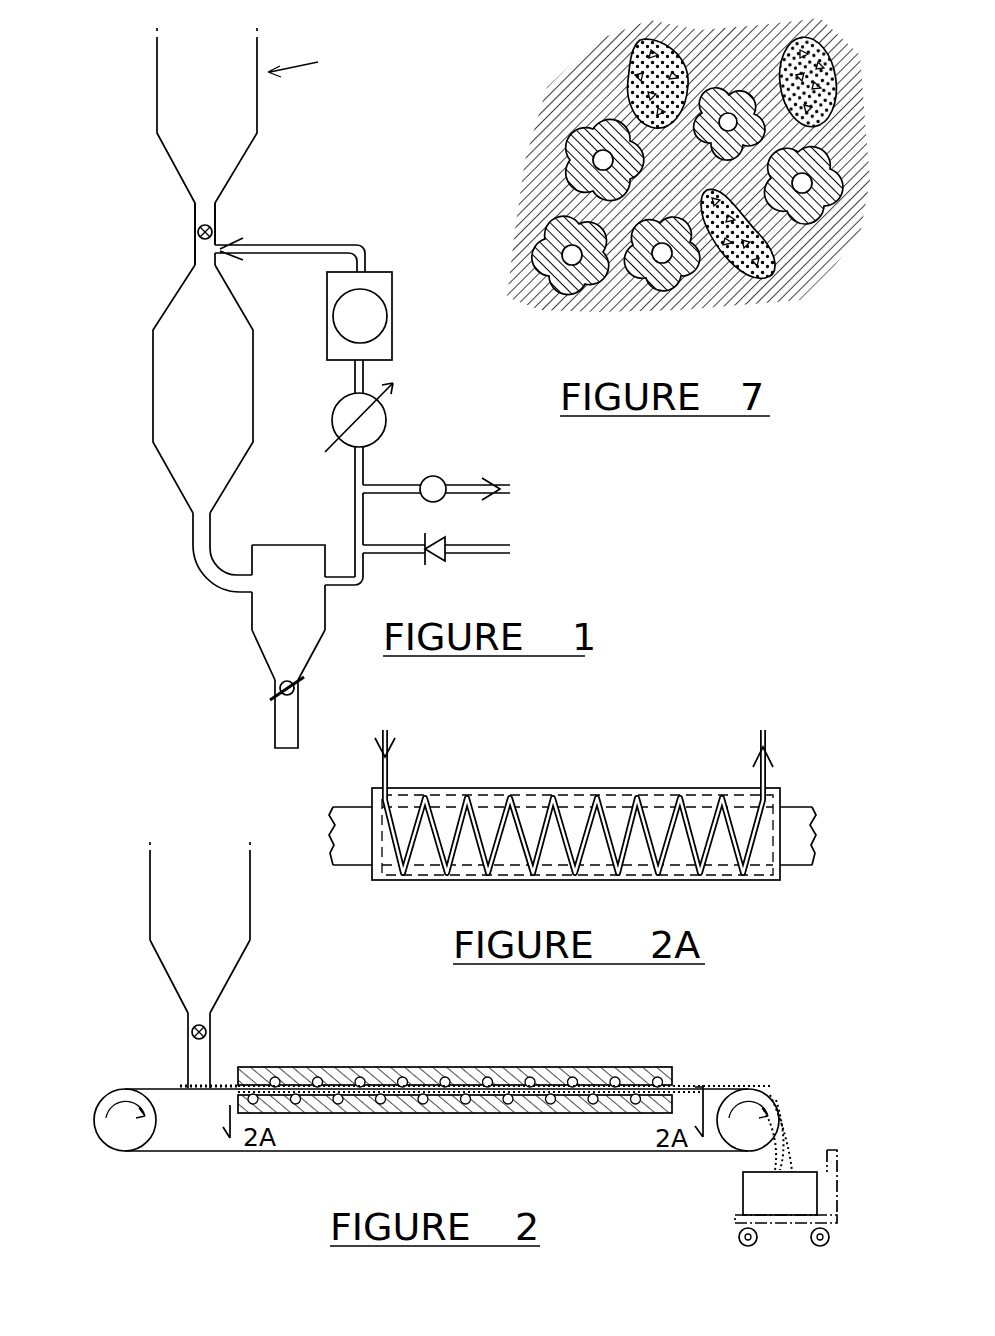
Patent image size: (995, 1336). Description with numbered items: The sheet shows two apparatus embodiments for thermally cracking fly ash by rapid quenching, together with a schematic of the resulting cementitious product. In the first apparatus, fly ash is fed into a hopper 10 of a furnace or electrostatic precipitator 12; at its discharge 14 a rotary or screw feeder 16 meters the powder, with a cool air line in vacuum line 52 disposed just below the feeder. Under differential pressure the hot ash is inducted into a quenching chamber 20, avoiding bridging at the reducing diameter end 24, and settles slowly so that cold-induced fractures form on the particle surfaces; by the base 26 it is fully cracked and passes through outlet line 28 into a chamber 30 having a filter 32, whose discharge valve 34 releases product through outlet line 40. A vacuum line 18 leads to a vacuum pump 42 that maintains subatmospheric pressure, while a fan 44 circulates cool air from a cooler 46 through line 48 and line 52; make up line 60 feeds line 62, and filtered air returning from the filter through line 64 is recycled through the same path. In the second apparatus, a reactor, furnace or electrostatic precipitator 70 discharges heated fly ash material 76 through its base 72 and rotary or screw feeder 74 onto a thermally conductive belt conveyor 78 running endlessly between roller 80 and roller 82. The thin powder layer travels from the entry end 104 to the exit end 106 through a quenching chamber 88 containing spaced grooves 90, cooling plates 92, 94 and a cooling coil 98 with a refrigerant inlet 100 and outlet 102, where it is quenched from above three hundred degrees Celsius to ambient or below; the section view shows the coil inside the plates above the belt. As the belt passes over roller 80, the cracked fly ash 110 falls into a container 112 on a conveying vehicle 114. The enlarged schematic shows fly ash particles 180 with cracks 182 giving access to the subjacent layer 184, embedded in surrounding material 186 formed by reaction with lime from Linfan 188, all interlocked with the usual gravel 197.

In FIG. 1, the hopper 10 is at (170, 88).
In FIG. 1, the furnace or electrostatic precipitator 12 is at (309, 64).
In FIG. 1, the discharge 14 is at (205, 212).
In FIG. 1, the rotary or screw feeder 16 is at (196, 232).
In FIG. 1, the vacuum line 18 is at (391, 485).
In FIG. 1, the quenching chamber 20 is at (165, 373).
In FIG. 1, the reducing diameter end 24 is at (213, 205).
In FIG. 1, the base 26 is at (200, 517).
In FIG. 1, the outlet line 28 is at (232, 578).
In FIG. 1, the chamber 30 is at (265, 544).
In FIG. 1, the filter 32 is at (285, 657).
In FIG. 1, the discharge valve 34 is at (280, 684).
In FIG. 1, the outlet line 40 is at (275, 724).
In FIG. 1, the vacuum pump 42 is at (441, 479).
In FIG. 1, the fan 44 is at (326, 318).
In FIG. 1, the cooler 46 is at (332, 416).
In FIG. 1, the line 48 is at (354, 378).
In FIG. 1, the cool air line in vacuum line 52 is at (297, 245).
In FIG. 1, the make up line 60 is at (385, 557).
In FIG. 1, the line 62 is at (355, 500).
In FIG. 1, the line 64 is at (343, 586).
In FIG. 2, the reactor, furnace or electrostatic precipitator 70 is at (165, 899).
In FIG. 2, the base 72 is at (188, 985).
In FIG. 2, the rotary or screw feeder 74 is at (191, 1031).
In FIG. 2, the heated fly ash material 76 is at (185, 1083).
In FIG. 2A, the belt conveyor 78 is at (356, 868).
In FIG. 2, the belt conveyor 78 is at (200, 1092).
In FIG. 2, the roller 80 is at (745, 1143).
In FIG. 2, the roller 82 is at (116, 1133).
In FIG. 2, the quenching chamber 88 is at (346, 1067).
In FIG. 2, the grooves 90 is at (445, 1066).
In FIG. 2, the cooling plate 92 is at (592, 1069).
In FIG. 2, the cooling plate 94 is at (360, 1114).
In FIG. 2A, the cooling coil 98 is at (585, 820).
In FIG. 2, the cooling coil 98 is at (585, 1114).
In FIG. 2A, the inlet 100 is at (392, 771).
In FIG. 2A, the outlet 102 is at (758, 781).
In FIG. 2, the entry end 104 is at (229, 1082).
In FIG. 2, the exit end 106 is at (680, 1090).
In FIG. 2, the cracked fly ash 110 is at (792, 1160).
In FIG. 2, the container 112 is at (742, 1197).
In FIG. 2, the conveying vehicle 114 is at (790, 1228).
In FIG. 7, the fly ash particles 180 is at (570, 183).
In FIG. 7, the cracks 182 is at (700, 287).
In FIG. 7, the subjacent layer 184 is at (572, 140).
In FIG. 7, the surrounding material 186 is at (540, 97).
In FIG. 7, the Linfan 188 is at (568, 307).
In FIG. 7, the gravel 197 is at (643, 50).